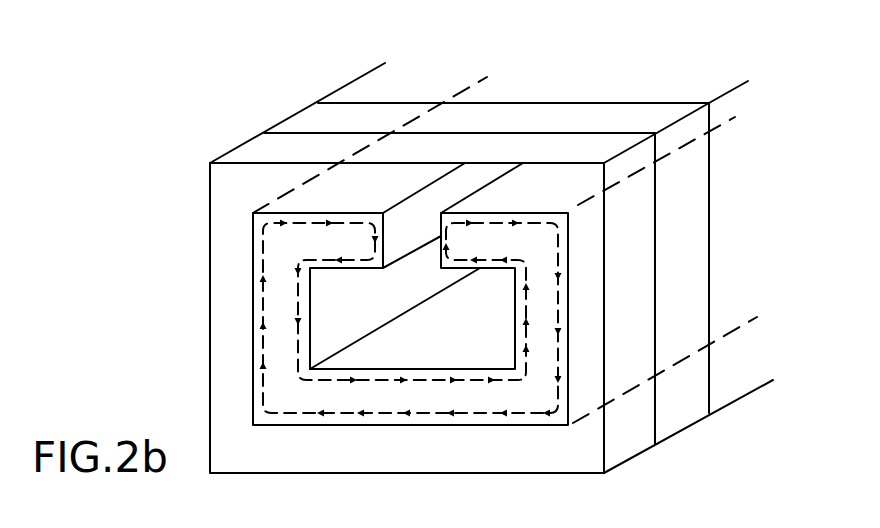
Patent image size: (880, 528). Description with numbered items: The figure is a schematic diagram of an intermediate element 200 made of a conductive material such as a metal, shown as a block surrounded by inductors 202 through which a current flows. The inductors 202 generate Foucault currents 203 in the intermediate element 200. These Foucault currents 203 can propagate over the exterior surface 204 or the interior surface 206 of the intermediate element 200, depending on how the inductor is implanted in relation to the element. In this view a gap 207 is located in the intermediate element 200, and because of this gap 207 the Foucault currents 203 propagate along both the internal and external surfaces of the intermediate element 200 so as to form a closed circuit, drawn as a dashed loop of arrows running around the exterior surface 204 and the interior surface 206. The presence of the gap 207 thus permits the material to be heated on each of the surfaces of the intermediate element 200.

The intermediate element 200 is at (530, 214).
The inductors 202 is at (510, 152).
The Foucault currents 203 is at (462, 413).
The exterior surface 204 is at (580, 310).
The interior surface 206 is at (513, 318).
The gap 207 is at (420, 222).